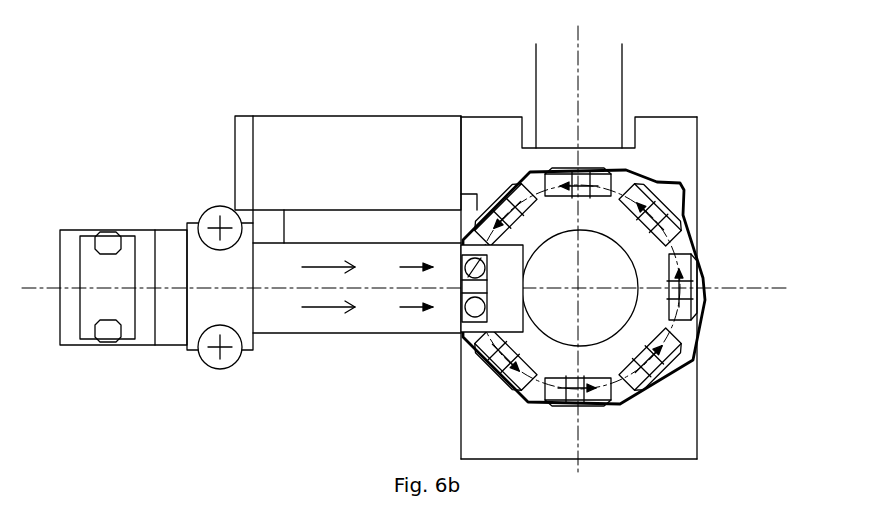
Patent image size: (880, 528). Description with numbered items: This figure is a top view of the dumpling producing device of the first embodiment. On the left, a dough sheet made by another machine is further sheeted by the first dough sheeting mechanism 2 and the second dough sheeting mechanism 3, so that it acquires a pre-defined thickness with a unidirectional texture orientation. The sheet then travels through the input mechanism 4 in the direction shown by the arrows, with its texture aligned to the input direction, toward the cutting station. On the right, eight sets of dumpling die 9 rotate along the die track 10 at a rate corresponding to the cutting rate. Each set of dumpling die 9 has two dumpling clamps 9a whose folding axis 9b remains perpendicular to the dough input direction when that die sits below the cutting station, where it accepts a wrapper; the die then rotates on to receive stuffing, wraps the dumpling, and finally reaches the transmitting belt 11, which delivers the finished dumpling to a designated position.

The first dough sheeting mechanism 2 is at (106, 237).
The second dough sheeting mechanism 3 is at (210, 214).
The input mechanism 4 is at (307, 328).
The dumpling die 9 is at (688, 313).
The dumpling clamps 9a is at (475, 318).
The folding axis 9b is at (477, 310).
The die track 10 is at (682, 232).
The transmitting belt 11 is at (603, 107).